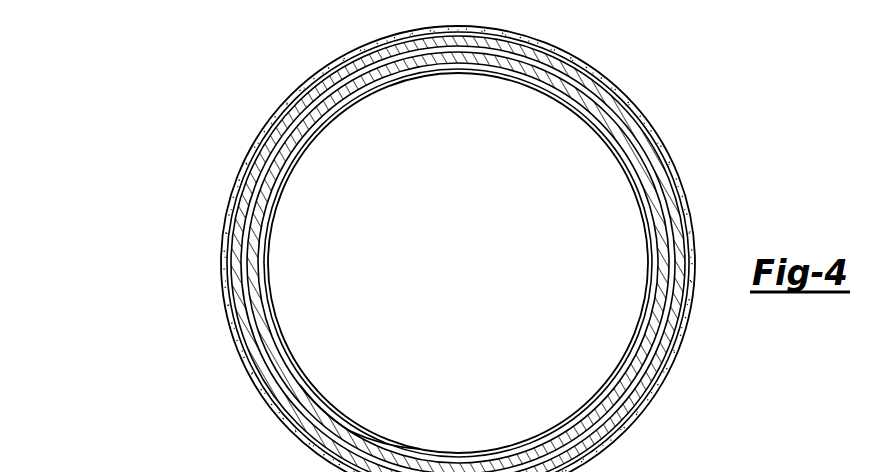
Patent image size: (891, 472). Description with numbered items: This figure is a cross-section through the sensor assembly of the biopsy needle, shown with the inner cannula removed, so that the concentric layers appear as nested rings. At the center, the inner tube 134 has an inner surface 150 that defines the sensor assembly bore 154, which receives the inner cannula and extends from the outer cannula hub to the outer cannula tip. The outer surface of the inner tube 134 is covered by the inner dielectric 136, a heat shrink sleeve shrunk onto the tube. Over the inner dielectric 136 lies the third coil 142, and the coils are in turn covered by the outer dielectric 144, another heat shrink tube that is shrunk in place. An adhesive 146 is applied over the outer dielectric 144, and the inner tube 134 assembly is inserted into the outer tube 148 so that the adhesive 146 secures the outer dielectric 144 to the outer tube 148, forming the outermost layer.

The inner tube 134 is at (273, 313).
The inner dielectric 136 is at (258, 298).
The third coil 142 is at (257, 213).
The outer dielectric 144 is at (270, 160).
The adhesive 146 is at (237, 233).
The outer tube 148 is at (240, 187).
The inner surface 150 is at (333, 402).
The sensor assembly bore 154 is at (375, 432).